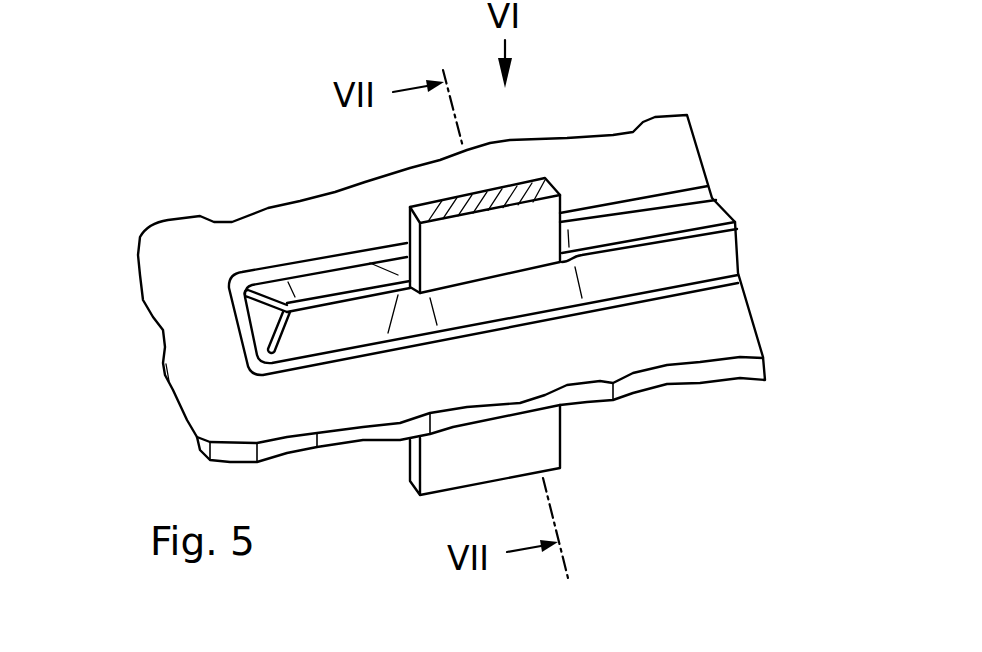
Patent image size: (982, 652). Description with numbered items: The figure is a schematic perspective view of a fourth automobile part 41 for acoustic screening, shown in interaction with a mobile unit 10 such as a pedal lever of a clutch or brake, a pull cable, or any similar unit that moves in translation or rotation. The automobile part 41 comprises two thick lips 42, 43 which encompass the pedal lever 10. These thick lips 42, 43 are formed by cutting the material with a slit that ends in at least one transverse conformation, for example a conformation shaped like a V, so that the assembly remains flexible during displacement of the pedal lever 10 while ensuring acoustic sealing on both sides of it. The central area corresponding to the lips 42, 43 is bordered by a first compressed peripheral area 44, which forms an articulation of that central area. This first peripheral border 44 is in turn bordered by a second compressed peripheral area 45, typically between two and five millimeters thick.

The mobile unit 10 is at (511, 254).
The automobile part 41 is at (99, 174).
The thick lip 42 is at (715, 215).
The thick lip 43 is at (728, 257).
The first compressed peripheral area 44 is at (248, 350).
The second compressed peripheral area 45 is at (217, 407).